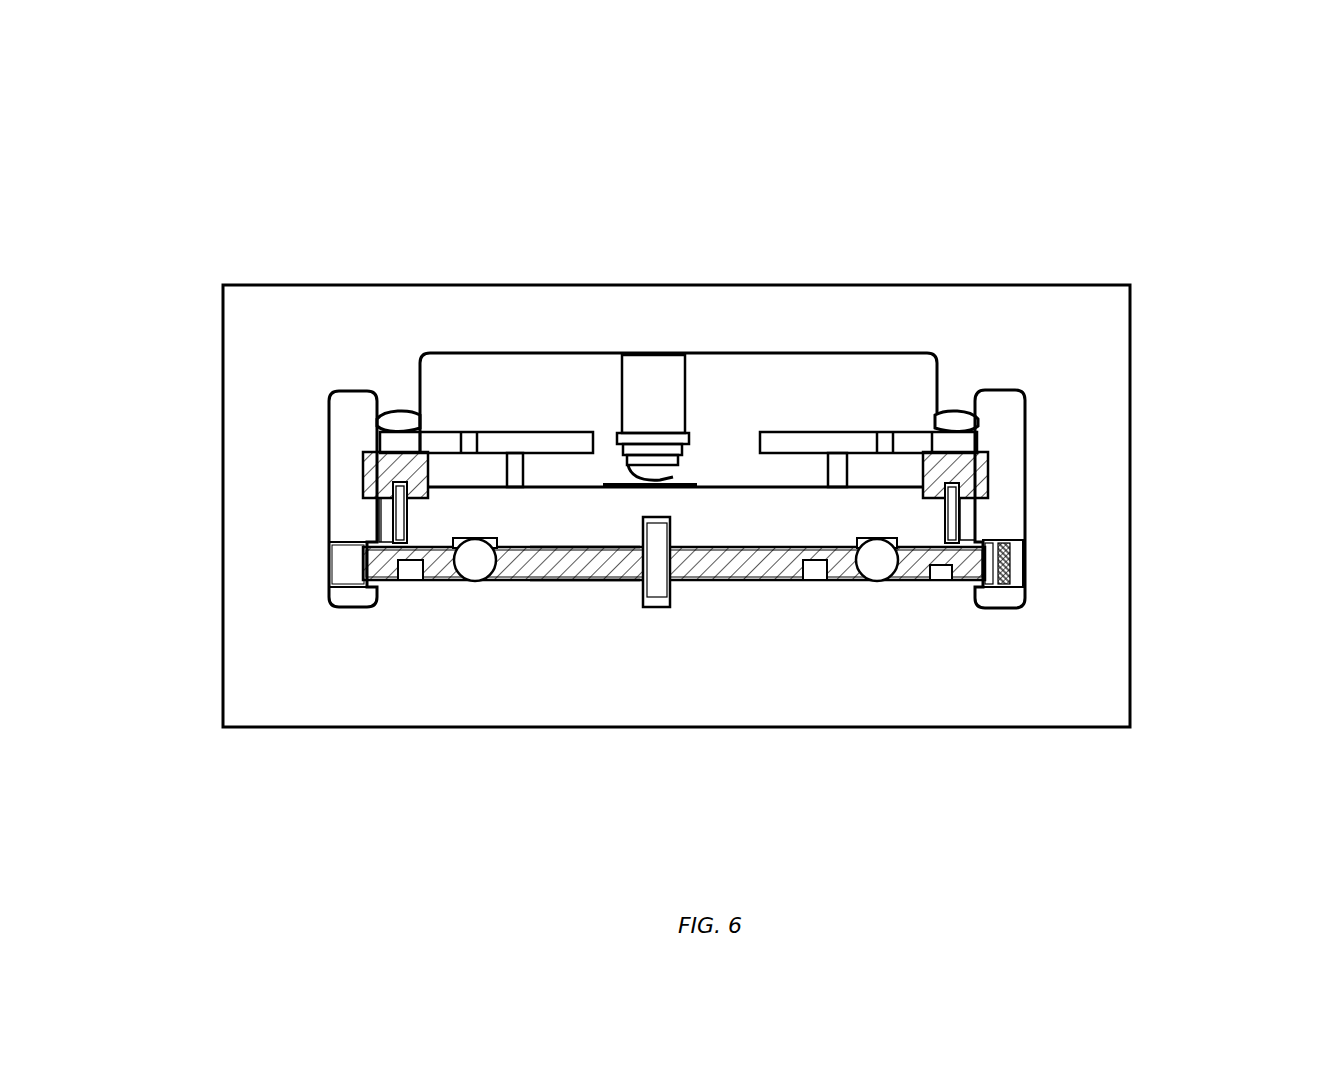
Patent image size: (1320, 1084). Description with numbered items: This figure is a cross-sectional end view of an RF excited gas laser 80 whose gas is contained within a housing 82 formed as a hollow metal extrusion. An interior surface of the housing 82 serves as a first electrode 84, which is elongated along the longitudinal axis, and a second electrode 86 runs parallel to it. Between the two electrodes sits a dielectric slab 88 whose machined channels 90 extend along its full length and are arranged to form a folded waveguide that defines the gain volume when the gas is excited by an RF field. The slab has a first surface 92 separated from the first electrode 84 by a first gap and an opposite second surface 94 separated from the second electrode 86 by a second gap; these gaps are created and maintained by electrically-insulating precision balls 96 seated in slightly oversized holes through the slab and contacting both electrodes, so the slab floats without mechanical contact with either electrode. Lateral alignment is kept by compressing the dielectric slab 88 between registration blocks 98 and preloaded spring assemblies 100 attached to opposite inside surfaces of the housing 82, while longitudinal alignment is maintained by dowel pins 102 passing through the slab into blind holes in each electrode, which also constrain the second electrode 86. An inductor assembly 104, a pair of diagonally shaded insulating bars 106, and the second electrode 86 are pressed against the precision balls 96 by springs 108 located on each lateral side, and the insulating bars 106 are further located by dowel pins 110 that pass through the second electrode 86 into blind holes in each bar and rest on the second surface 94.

The RF excited gas laser 80 is at (1175, 157).
The housing 82 is at (235, 339).
The first electrode 84 is at (737, 580).
The second electrode 86 is at (725, 497).
The dielectric slab 88 is at (388, 583).
The channels 90 is at (938, 583).
The first surface 92 is at (573, 583).
The second surface 94 is at (567, 543).
The precision balls 96 is at (472, 583).
The registration blocks 98 is at (335, 570).
The preloaded spring assemblies 100 is at (1022, 577).
The dowel pins 102 is at (653, 607).
The inductor assembly 104 is at (540, 440).
The insulating bars 106 is at (368, 477).
The springs 108 is at (398, 415).
The dowel pins 110 is at (400, 510).